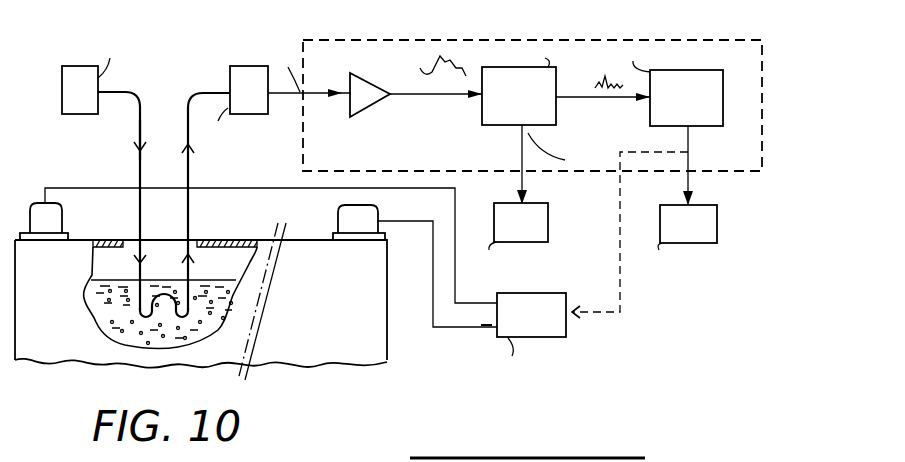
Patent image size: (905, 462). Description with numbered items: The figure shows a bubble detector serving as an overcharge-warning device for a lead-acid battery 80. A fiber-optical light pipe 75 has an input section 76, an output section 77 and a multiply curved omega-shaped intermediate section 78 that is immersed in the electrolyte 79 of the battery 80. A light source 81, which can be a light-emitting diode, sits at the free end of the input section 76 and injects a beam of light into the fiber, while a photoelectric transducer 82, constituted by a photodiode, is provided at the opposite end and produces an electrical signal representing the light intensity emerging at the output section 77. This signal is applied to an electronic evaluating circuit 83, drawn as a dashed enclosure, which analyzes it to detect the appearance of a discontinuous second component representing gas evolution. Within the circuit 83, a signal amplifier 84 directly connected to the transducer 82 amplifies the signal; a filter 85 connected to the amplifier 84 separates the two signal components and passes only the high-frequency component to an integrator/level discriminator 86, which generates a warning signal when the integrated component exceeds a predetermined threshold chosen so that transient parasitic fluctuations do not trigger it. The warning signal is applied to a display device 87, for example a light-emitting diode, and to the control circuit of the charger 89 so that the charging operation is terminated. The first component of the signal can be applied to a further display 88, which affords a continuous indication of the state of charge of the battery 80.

The fiber-optical light pipe 75 is at (126, 140).
The input section 76 is at (138, 168).
The output section 77 is at (190, 168).
The intermediate section 78 is at (140, 315).
The electrolyte 79 is at (98, 289).
The lead-acid battery 80 is at (345, 318).
The light source 81 is at (74, 72).
The photoelectric transducer 82 is at (245, 71).
The electronic evaluating circuit 83 is at (362, 40).
The signal amplifier 84 is at (372, 107).
The filter 85 is at (565, 125).
The integrator/level discriminator 86 is at (647, 183).
The display device 87 is at (687, 235).
The display 88 is at (517, 234).
The charger 89 is at (305, 283).